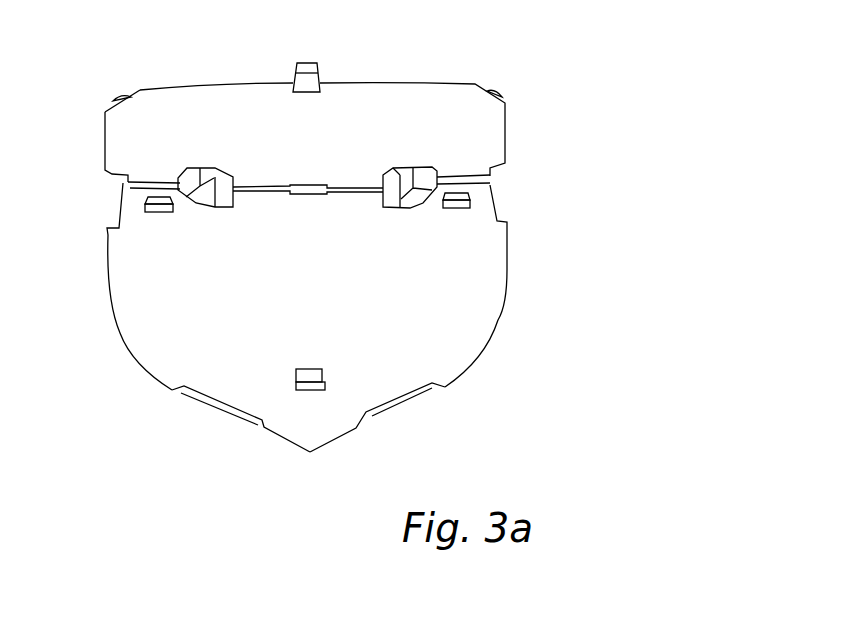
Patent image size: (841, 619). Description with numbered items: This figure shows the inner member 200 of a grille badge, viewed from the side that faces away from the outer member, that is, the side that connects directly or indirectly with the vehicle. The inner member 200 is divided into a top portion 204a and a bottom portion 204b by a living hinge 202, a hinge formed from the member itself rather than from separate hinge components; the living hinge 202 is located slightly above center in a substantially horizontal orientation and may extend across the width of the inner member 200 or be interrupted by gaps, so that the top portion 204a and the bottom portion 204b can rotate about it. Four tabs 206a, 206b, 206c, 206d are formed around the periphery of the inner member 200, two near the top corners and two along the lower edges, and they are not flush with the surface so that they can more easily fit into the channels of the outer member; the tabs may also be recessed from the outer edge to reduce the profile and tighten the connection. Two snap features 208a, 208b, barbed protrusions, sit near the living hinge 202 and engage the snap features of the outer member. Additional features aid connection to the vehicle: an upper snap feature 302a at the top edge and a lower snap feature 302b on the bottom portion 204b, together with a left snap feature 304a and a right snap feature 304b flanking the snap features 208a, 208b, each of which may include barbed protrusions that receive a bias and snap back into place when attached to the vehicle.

The inner member 200 is at (594, 33).
The living hinge 202 is at (124, 183).
The top portion 204a is at (497, 128).
The bottom portion 204b is at (463, 312).
The tab 206a is at (500, 88).
The tab 206b is at (117, 99).
The tab 206c is at (395, 410).
The tab 206d is at (207, 402).
The snap feature 208a is at (417, 205).
The snap feature 208b is at (202, 205).
The upper snap feature 302a is at (314, 62).
The lower snap feature 302b is at (312, 372).
The left snap feature 304a is at (157, 213).
The right snap feature 304b is at (492, 198).